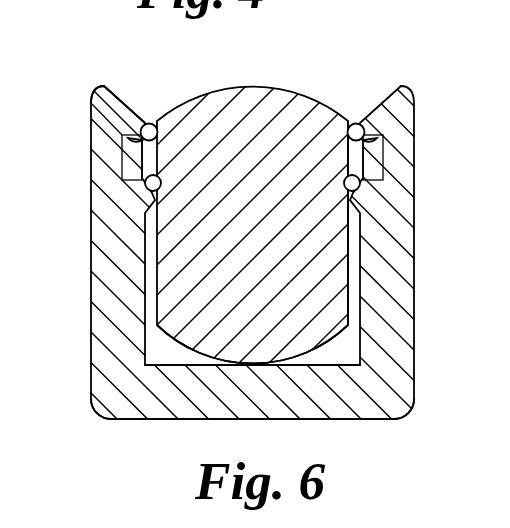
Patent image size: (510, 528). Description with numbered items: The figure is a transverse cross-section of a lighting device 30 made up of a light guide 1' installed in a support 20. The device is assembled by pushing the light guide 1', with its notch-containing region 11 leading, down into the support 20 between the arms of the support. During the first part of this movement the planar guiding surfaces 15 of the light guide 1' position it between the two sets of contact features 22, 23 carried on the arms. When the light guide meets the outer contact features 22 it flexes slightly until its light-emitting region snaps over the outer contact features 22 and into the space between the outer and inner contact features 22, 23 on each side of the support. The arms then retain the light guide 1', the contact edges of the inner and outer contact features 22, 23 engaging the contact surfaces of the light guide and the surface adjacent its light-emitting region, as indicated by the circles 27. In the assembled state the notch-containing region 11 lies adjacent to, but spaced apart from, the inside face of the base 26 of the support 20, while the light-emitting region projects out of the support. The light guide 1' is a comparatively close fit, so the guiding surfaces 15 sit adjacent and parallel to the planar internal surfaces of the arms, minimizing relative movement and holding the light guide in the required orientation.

The light guide 1' is at (255, 264).
The notch-containing region 11 is at (325, 341).
The guiding surfaces 15 is at (349, 279).
The support 20 is at (91, 99).
The outer contact features 22 is at (139, 121).
The inner contact features 23 is at (150, 196).
The base 26 is at (155, 407).
The circles 27 is at (150, 173).
The lighting device 30 is at (370, 56).